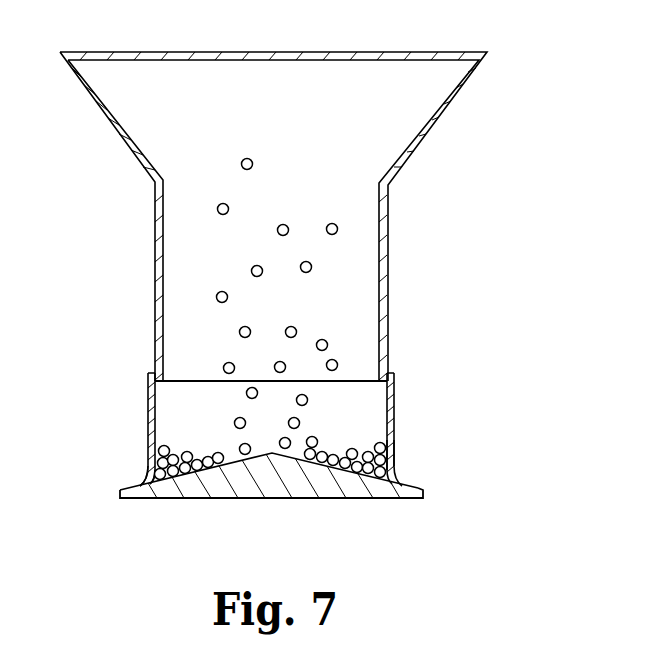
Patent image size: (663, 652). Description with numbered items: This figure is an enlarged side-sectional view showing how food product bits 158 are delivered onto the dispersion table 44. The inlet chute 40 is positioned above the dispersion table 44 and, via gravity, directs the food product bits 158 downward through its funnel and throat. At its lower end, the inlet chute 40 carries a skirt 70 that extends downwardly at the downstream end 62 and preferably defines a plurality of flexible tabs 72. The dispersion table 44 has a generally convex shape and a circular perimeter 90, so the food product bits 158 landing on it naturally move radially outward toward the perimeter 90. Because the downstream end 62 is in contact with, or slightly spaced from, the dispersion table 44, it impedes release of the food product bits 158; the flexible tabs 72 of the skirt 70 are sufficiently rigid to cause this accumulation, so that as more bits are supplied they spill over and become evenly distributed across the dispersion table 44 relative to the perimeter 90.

The inlet chute 40 is at (455, 150).
The skirt 70 is at (130, 393).
The flexible tabs 72 is at (152, 481).
The downstream end 62 is at (394, 452).
The perimeter 90 is at (415, 490).
The dispersion table 44 is at (338, 512).
The food product bits 158 is at (298, 327).